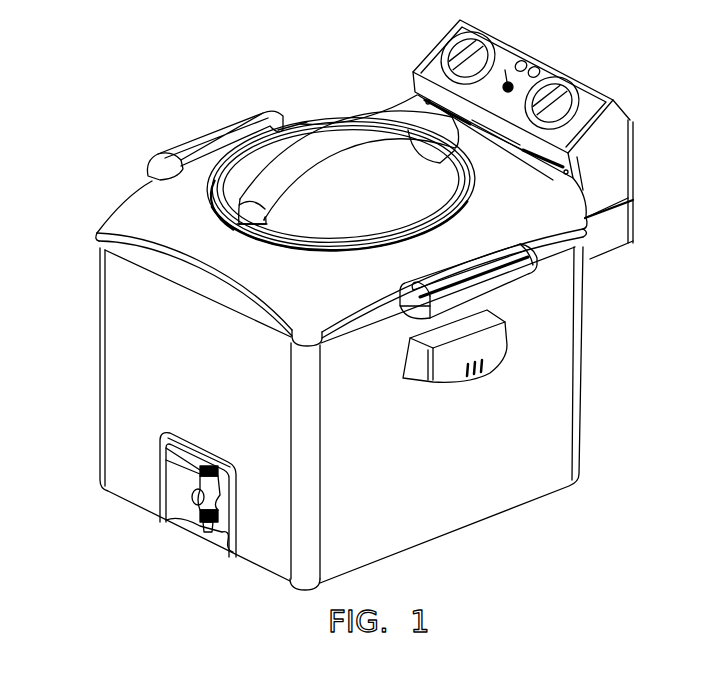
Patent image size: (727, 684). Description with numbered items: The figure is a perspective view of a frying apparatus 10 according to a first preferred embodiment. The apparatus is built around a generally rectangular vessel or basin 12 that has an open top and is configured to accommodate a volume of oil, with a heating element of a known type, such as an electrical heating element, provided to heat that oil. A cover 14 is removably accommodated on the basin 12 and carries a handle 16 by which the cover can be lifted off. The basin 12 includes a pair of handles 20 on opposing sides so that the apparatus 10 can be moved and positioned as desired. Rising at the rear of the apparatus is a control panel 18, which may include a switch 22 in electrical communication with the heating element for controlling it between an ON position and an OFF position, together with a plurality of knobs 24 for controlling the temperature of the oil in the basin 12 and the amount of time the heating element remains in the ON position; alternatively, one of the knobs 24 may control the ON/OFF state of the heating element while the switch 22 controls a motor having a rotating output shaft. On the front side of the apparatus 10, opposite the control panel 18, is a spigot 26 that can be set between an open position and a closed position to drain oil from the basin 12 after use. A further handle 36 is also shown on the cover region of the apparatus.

The frying apparatus 10 is at (94, 124).
The vessel or basin 12 is at (543, 430).
The cover 14 is at (148, 208).
The handle 16 is at (345, 128).
The control panel 18 is at (545, 45).
The handles 20 is at (493, 343).
The switch 22 is at (506, 68).
The knobs 24 is at (575, 86).
The spigot 26 is at (188, 543).
The handle 36 is at (510, 280).